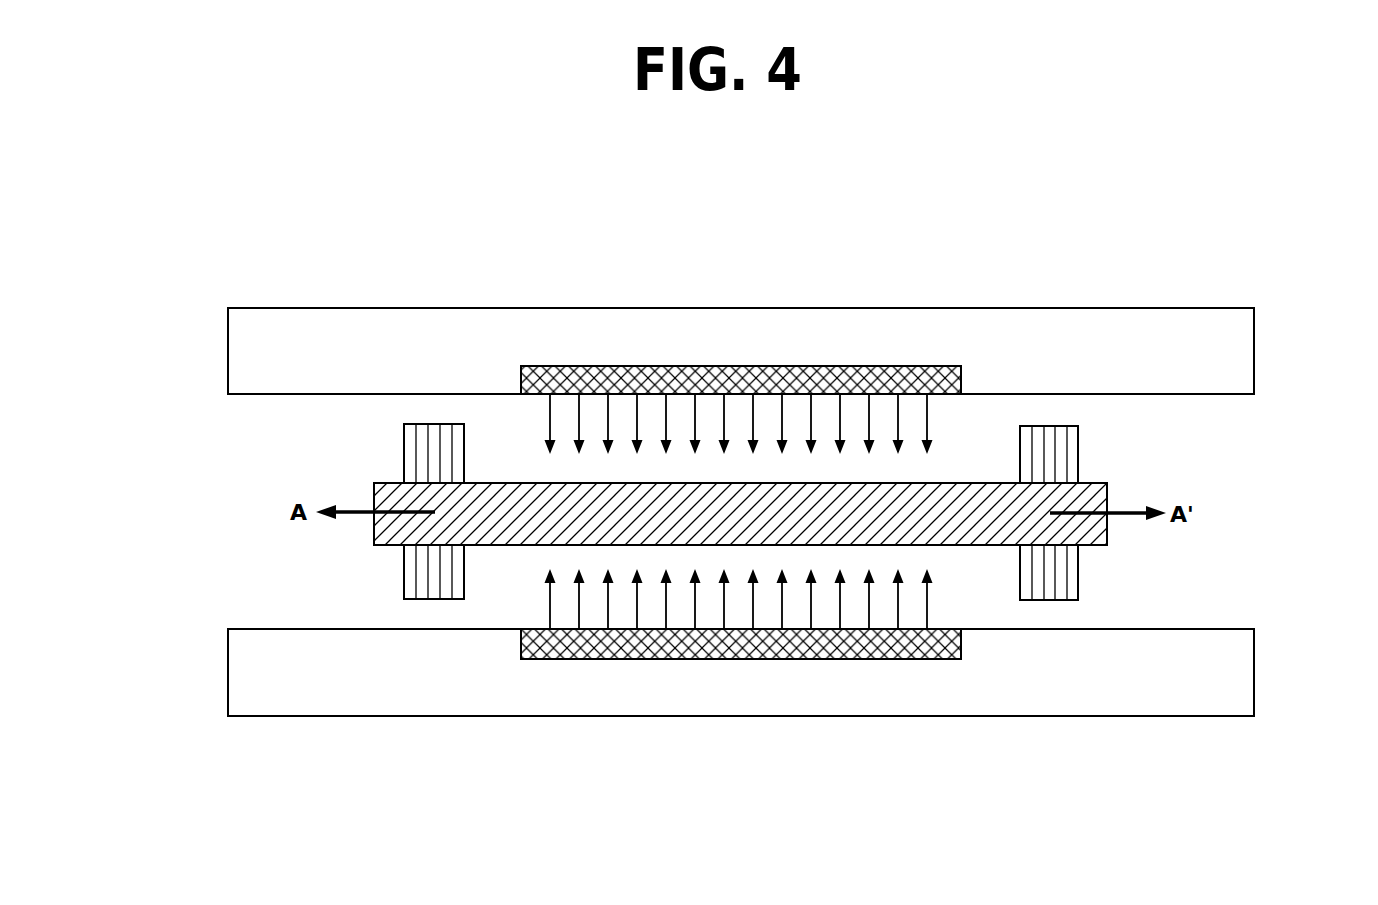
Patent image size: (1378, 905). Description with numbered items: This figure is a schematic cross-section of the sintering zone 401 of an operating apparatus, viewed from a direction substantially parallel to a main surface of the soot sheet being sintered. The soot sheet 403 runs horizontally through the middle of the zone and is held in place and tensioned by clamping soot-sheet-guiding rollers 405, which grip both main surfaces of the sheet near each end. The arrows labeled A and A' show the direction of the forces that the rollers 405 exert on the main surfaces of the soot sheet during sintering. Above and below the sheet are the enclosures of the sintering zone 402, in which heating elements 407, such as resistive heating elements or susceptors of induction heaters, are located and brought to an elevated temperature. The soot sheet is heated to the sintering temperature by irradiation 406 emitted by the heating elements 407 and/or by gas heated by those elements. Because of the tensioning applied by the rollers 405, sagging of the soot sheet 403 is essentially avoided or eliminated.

The sintering zone 401 is at (228, 252).
The enclosures of the sintering zone 402 is at (1223, 355).
The soot sheet 403 is at (422, 520).
The soot-sheet-guiding rollers 405 is at (435, 453).
The irradiation 406 is at (873, 427).
The heating elements 407 is at (755, 368).